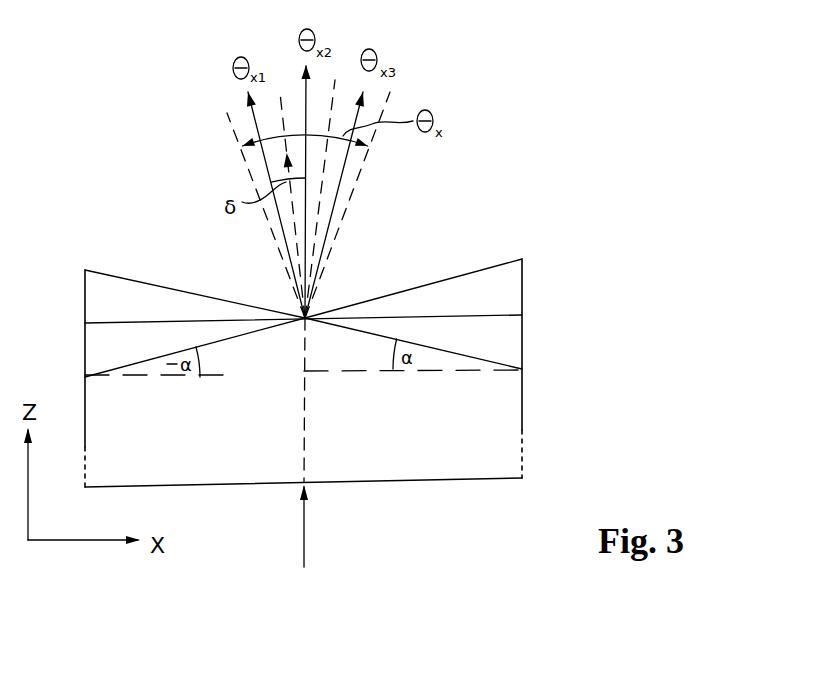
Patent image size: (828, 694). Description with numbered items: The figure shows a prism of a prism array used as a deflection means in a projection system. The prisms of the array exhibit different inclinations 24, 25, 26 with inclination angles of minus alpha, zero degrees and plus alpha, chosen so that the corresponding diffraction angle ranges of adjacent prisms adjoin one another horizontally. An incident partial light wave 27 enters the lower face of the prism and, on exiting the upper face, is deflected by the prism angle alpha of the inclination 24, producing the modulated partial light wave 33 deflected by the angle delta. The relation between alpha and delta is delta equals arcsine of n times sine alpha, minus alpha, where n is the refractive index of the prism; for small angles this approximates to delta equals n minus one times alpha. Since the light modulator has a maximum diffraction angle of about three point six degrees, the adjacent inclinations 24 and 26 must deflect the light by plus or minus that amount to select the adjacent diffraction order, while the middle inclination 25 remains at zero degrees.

The inclination 24 is at (137, 280).
The inclination 25 is at (110, 322).
The inclination 26 is at (490, 262).
The incident partial light wave 27 is at (308, 527).
The modulated partial light wave 33 is at (256, 117).